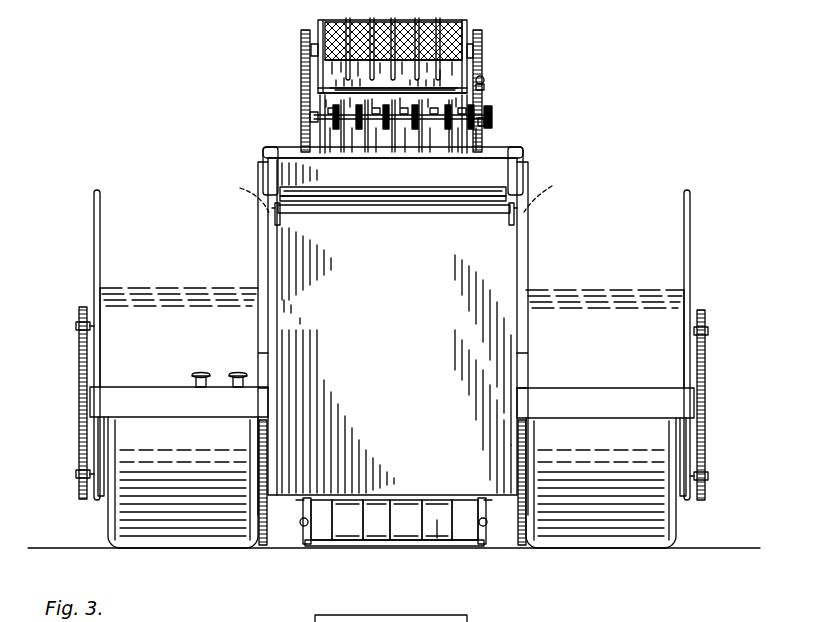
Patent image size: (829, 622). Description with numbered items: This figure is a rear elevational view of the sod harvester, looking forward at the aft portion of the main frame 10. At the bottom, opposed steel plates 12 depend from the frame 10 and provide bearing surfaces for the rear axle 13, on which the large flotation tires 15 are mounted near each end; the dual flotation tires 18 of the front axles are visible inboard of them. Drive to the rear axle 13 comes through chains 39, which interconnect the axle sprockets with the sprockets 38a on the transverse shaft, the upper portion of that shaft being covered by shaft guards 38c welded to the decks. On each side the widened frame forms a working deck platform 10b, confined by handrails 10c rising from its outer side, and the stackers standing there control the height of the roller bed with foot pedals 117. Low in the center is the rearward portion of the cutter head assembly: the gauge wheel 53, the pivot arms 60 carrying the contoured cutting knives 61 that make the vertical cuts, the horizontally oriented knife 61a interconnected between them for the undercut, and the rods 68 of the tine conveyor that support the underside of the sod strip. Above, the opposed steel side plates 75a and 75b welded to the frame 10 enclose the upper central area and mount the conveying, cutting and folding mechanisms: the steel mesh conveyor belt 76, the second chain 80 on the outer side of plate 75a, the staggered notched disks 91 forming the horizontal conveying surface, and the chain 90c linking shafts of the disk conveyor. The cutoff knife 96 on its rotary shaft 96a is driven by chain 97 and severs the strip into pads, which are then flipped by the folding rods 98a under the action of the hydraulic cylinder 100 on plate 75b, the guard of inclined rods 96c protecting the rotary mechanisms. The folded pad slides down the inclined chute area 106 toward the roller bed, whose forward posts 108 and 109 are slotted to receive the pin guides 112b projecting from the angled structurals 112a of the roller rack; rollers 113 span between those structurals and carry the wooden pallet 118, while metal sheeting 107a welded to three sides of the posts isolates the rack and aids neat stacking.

The main frame 10 is at (185, 406).
The working deck platform 10b is at (600, 389).
The handrails 10c is at (99, 193).
The steel plates 12 is at (101, 500).
The rear axle 13 is at (78, 477).
The flotation tires 15 is at (193, 527).
The dual flotation tires 18 is at (257, 546).
The sprockets 38a is at (80, 318).
The shaft guards 38c is at (171, 301).
The chains 39 is at (80, 384).
The gauge wheel 53 is at (437, 522).
The pivot arms 60 is at (490, 490).
The cutting knife 61 is at (308, 541).
The horizontally oriented knife 61a is at (399, 545).
The rods 68 is at (378, 545).
The side plate 75a is at (320, 38).
The side plate 75b is at (468, 32).
The steel mesh conveyor belt 76 is at (318, 52).
The second chain 80 is at (301, 101).
The chain 90c is at (492, 112).
The notched disks 91 is at (372, 92).
The cutoff knife 96 is at (443, 86).
The rotary shaft 96a is at (474, 50).
The inclined rods 96c is at (364, 30).
The chain 97 is at (484, 50).
The folding rods 98a is at (478, 122).
The hydraulic cylinder 100 is at (486, 82).
The inclined chute area 106 is at (380, 137).
The metal sheeting 107a is at (410, 367).
The forward post 108 is at (528, 247).
The forward post 109 is at (260, 250).
The angled structurals 112a is at (279, 222).
The pin guide 112b is at (399, 194).
The rollers 113 is at (456, 212).
The foot pedals 117 is at (225, 375).
The wooden pallet 118 is at (500, 192).